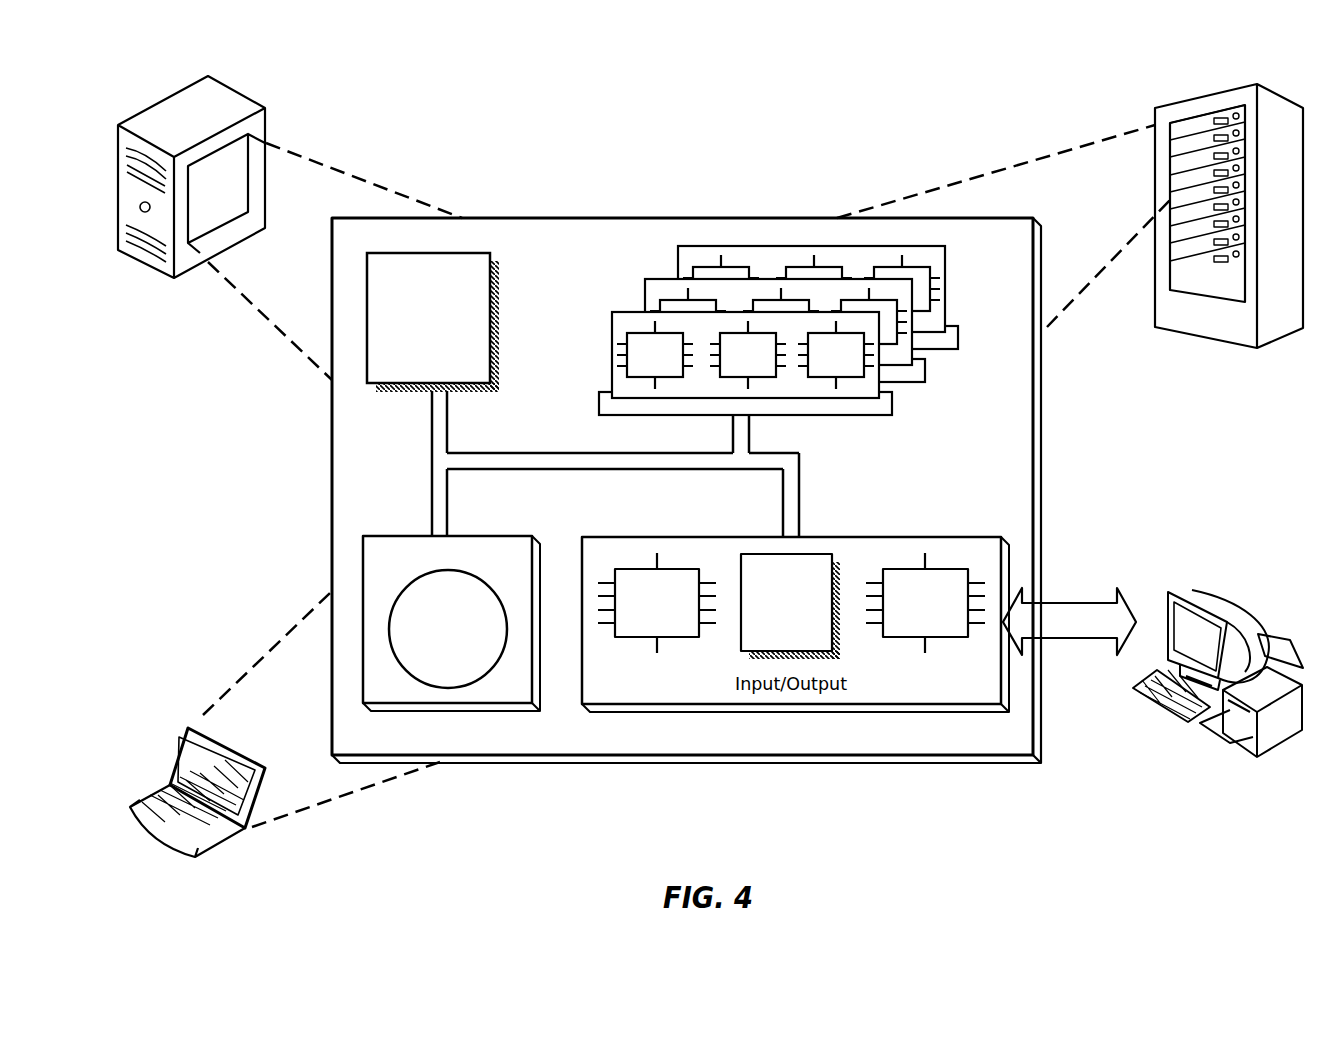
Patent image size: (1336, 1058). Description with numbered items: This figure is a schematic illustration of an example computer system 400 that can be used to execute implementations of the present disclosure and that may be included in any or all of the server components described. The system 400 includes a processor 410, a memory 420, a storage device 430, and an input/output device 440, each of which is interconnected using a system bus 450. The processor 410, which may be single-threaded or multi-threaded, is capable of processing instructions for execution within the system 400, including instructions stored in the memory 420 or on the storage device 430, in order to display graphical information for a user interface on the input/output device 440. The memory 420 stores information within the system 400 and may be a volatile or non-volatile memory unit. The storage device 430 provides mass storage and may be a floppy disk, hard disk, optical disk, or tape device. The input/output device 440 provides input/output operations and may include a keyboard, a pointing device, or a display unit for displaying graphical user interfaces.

The computer system 400 is at (510, 100).
The processor 410 is at (484, 375).
The memory 420 is at (951, 381).
The storage device 430 is at (523, 697).
The input/output device 440 is at (1167, 598).
The system bus 450 is at (614, 471).